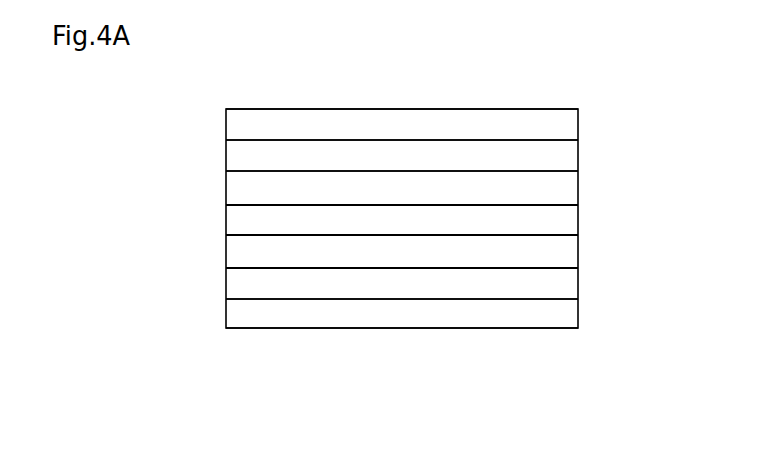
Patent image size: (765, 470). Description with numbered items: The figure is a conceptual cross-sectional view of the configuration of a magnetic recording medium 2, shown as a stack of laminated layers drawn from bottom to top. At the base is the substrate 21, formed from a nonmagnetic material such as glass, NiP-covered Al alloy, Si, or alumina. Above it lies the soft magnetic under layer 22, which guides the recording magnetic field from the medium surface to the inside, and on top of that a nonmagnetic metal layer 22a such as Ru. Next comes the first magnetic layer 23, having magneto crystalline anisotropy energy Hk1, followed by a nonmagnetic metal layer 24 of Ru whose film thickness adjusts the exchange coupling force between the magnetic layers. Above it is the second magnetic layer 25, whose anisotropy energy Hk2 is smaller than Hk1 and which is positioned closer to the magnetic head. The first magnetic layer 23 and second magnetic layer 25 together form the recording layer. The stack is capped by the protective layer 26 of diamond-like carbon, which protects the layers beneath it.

The magnetic recording medium 2 is at (467, 96).
The substrate 21 is at (578, 313).
The soft magnetic under layer 22 is at (578, 283).
The nonmagnetic metal layer 22a is at (578, 253).
The first magnetic layer 23 is at (578, 220).
The nonmagnetic metal layer 24 is at (578, 187).
The second magnetic layer 25 is at (578, 158).
The protective layer 26 is at (578, 128).